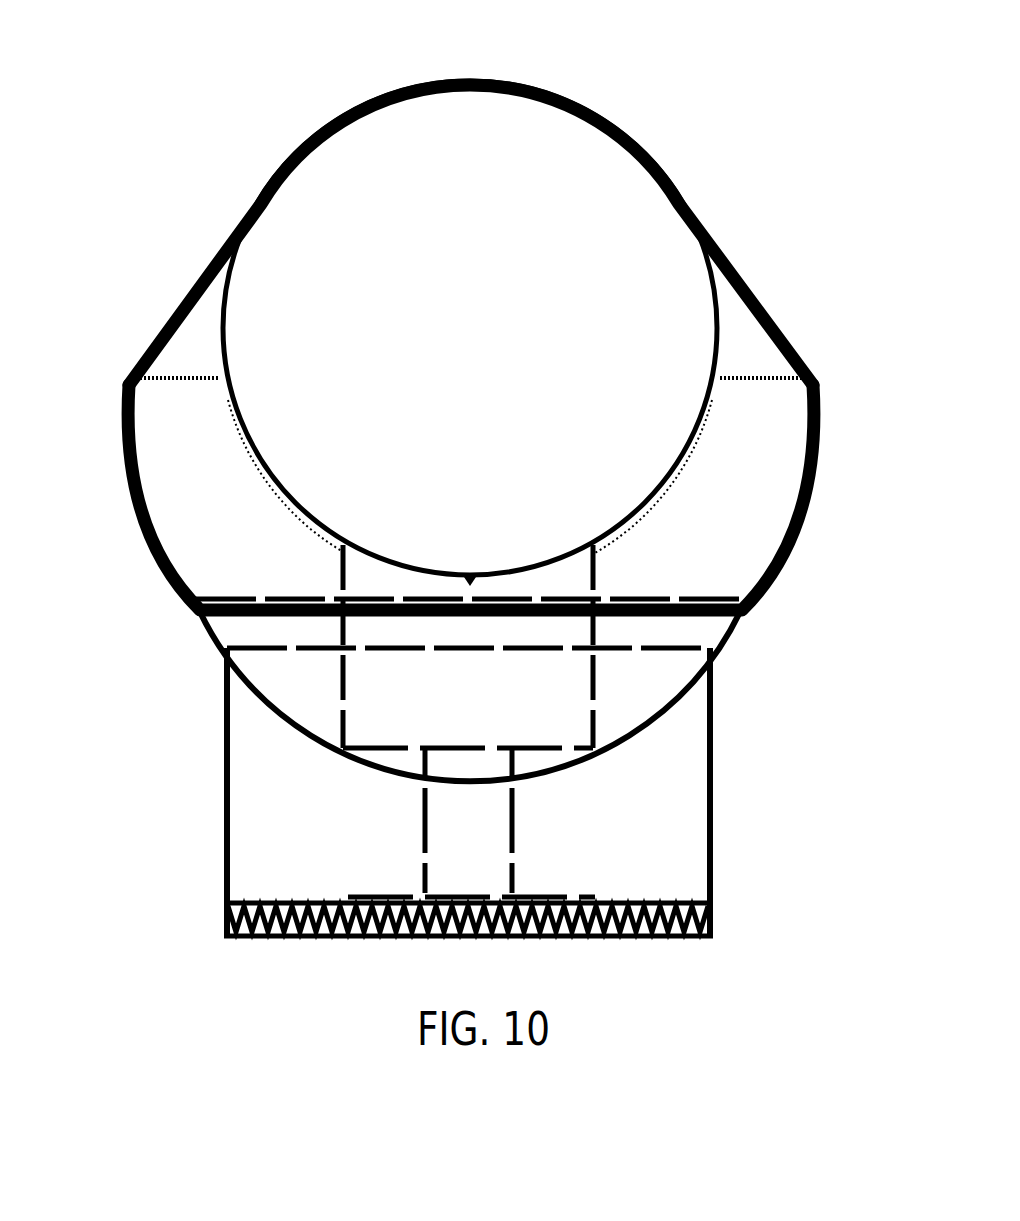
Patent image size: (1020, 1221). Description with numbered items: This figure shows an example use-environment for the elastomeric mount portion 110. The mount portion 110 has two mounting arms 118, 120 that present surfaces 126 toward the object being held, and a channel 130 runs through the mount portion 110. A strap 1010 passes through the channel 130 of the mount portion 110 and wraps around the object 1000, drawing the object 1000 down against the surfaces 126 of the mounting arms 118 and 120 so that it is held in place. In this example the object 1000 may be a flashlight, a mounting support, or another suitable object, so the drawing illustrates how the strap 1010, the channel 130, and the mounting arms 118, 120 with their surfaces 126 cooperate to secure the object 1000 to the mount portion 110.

The mount portion 110 is at (685, 812).
The mounting arm 118 is at (161, 404).
The mounting arm 120 is at (780, 403).
The surfaces 126 is at (243, 448).
The channel 130 is at (698, 630).
The object 1000 is at (497, 330).
The strap 1010 is at (482, 86).